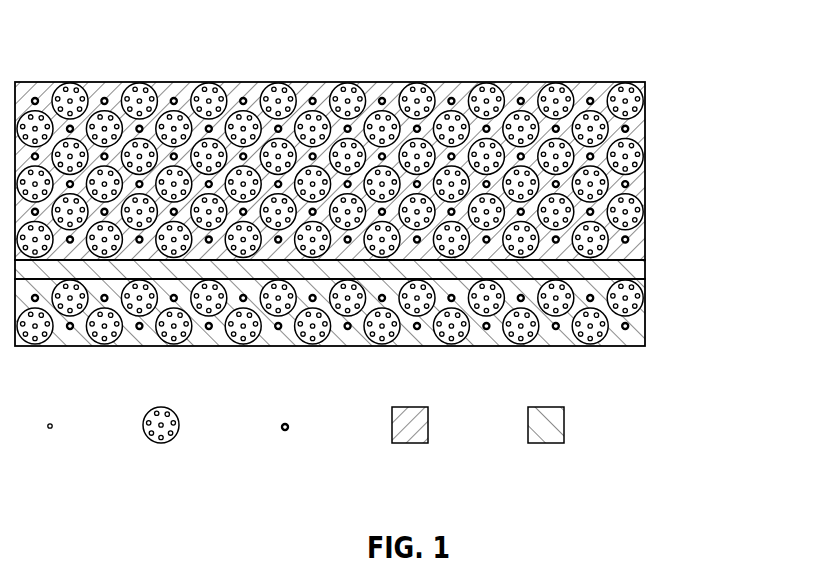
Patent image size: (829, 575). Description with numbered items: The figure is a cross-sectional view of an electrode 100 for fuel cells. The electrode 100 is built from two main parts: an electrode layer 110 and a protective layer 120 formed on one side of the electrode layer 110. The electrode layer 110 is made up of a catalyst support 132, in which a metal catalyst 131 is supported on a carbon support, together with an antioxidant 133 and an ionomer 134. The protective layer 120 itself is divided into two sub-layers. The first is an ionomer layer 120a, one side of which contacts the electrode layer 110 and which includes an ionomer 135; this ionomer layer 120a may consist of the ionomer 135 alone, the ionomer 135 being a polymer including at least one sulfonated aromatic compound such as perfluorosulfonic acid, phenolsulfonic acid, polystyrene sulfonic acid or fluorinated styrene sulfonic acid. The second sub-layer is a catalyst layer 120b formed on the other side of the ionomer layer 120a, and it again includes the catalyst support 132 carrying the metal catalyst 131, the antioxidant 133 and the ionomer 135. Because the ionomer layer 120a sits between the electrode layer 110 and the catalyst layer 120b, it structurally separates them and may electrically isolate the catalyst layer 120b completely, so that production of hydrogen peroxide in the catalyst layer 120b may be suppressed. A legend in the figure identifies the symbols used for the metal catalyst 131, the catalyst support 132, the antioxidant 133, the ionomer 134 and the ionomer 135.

The electrode for fuel cells 100 is at (409, 180).
The electrode layer 110 is at (645, 173).
The protective layer 120 is at (409, 303).
The ionomer layer 120a is at (645, 268).
The catalyst layer 120b is at (645, 314).
The metal catalyst 131 is at (73, 425).
The catalyst support 132 is at (186, 425).
The antioxidant 133 is at (310, 425).
The ionomer 134 is at (435, 425).
The ionomer 135 is at (570, 425).